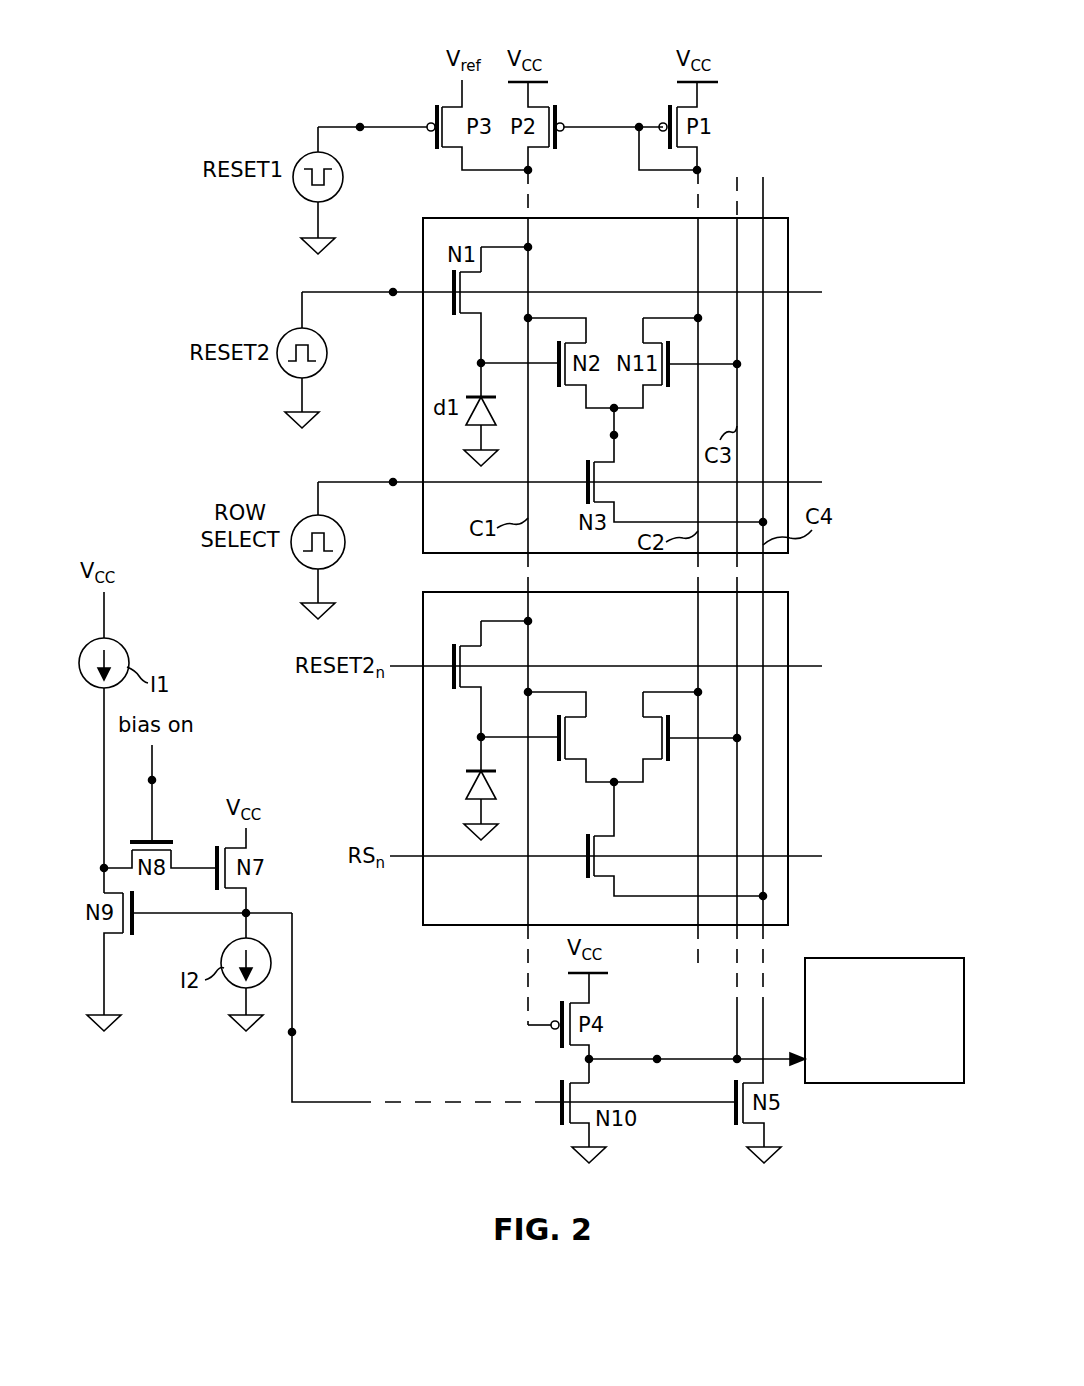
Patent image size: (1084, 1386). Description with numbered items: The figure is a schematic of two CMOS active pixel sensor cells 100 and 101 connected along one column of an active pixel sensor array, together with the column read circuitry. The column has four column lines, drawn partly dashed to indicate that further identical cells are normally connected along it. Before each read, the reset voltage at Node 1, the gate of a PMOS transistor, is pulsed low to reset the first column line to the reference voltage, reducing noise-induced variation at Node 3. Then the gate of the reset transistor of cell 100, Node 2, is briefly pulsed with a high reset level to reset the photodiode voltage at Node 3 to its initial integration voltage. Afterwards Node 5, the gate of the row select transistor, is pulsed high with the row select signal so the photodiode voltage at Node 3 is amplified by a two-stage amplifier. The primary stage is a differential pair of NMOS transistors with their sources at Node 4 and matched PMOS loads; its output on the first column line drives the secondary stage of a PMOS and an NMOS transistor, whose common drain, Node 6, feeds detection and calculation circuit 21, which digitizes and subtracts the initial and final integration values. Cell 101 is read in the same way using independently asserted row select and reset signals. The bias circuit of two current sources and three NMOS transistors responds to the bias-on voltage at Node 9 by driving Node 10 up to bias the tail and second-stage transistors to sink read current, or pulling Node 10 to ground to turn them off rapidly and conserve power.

The Node 1 is at (360, 127).
The Node 2 is at (393, 292).
The Node 3 is at (481, 363).
The Node 4 is at (614, 435).
The Node 5 is at (393, 482).
The Node 6 is at (657, 1059).
The Node 9 is at (152, 780).
The Node 10 is at (292, 1032).
The detection and calculation circuit 21 is at (868, 958).
The active pixel sensor cell 100 is at (781, 218).
The active pixel sensor cell 101 is at (788, 614).